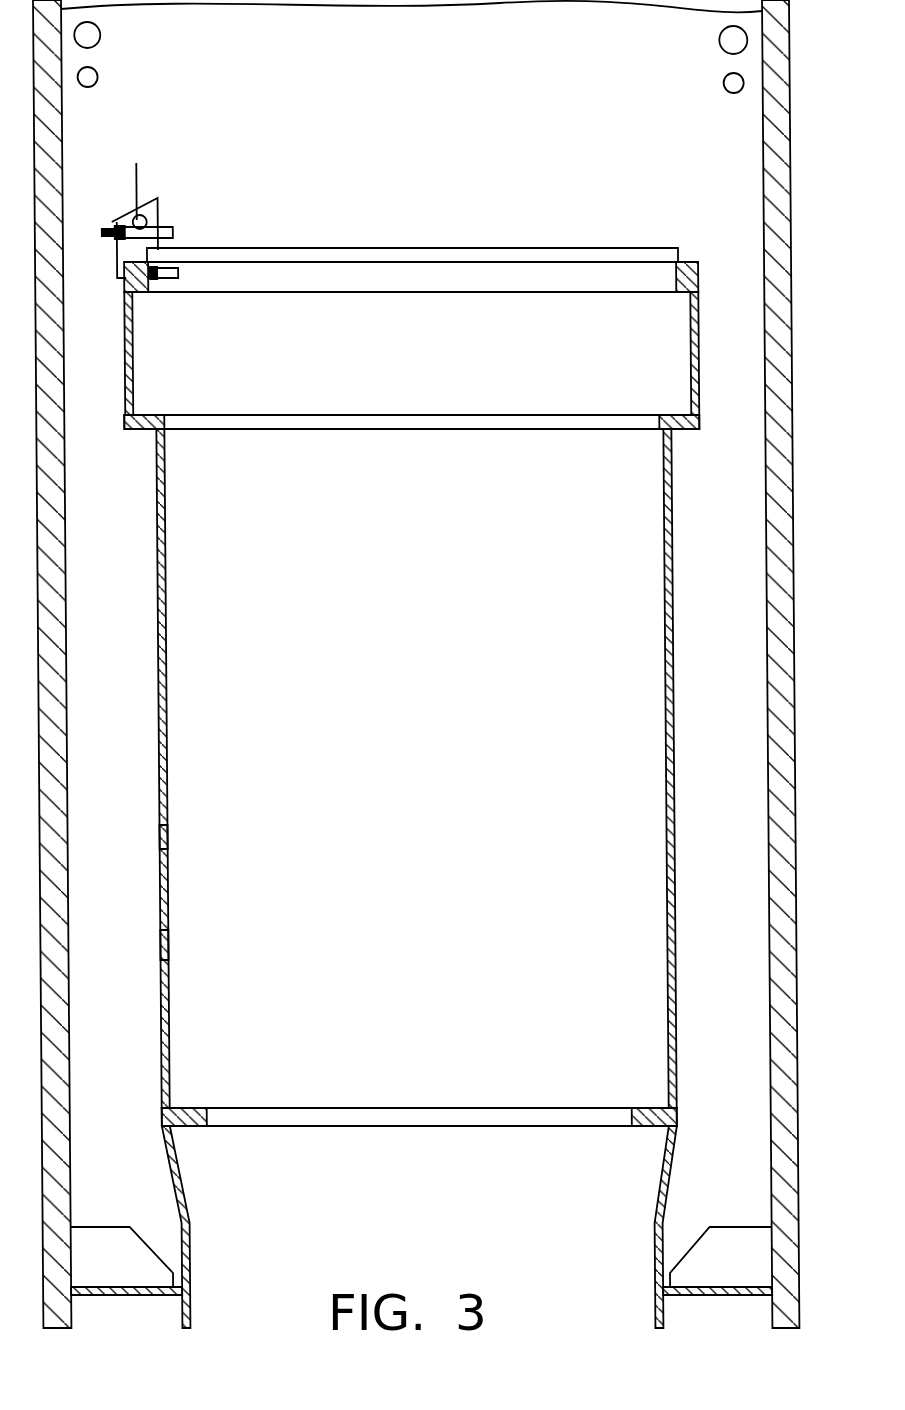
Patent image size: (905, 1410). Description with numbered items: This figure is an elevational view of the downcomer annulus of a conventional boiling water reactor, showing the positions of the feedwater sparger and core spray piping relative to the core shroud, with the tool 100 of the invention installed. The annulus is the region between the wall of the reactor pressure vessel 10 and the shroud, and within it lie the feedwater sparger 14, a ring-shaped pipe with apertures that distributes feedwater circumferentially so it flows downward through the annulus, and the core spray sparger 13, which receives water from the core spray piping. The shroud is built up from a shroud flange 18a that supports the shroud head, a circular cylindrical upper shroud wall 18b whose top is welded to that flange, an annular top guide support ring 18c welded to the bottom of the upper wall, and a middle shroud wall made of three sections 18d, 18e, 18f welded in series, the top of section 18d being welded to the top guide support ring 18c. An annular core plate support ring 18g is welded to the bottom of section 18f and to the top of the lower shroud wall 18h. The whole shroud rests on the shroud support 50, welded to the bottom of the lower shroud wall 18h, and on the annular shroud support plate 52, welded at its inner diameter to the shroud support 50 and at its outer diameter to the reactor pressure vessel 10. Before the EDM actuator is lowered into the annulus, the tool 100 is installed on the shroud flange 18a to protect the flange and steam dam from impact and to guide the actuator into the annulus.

The reactor pressure vessel 10 is at (62, 672).
The core spray sparger 13 is at (97, 77).
The feedwater sparger 14 is at (100, 33).
The tool 100 is at (178, 207).
The shroud flange 18a is at (143, 293).
The upper shroud wall 18b is at (131, 354).
The top guide support ring 18c is at (164, 419).
The middle shroud wall section 18d is at (162, 573).
The middle shroud wall section 18e is at (162, 835).
The middle shroud wall section 18f is at (162, 937).
The core plate support ring 18g is at (179, 1128).
The lower shroud wall 18h is at (174, 1194).
The shroud support 50 is at (179, 1270).
The shroud support plate 52 is at (95, 1296).